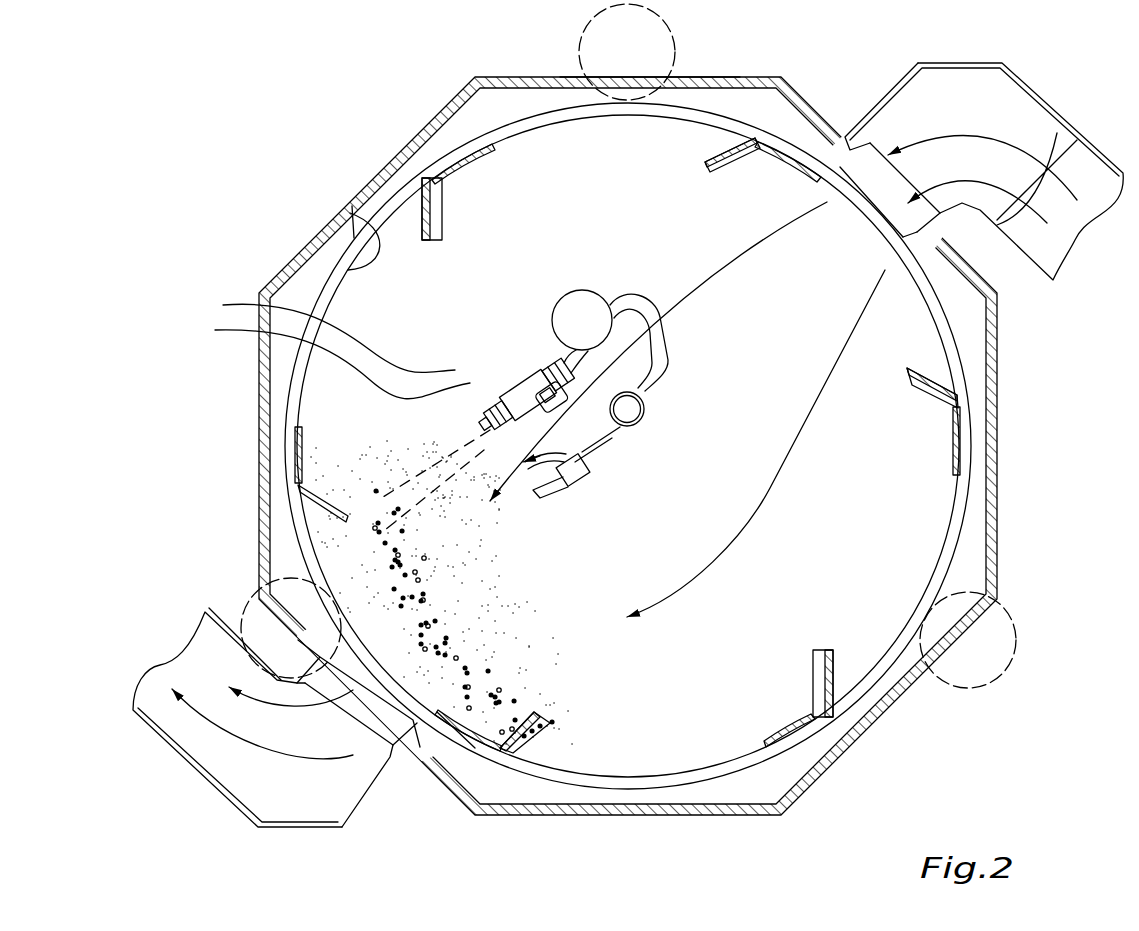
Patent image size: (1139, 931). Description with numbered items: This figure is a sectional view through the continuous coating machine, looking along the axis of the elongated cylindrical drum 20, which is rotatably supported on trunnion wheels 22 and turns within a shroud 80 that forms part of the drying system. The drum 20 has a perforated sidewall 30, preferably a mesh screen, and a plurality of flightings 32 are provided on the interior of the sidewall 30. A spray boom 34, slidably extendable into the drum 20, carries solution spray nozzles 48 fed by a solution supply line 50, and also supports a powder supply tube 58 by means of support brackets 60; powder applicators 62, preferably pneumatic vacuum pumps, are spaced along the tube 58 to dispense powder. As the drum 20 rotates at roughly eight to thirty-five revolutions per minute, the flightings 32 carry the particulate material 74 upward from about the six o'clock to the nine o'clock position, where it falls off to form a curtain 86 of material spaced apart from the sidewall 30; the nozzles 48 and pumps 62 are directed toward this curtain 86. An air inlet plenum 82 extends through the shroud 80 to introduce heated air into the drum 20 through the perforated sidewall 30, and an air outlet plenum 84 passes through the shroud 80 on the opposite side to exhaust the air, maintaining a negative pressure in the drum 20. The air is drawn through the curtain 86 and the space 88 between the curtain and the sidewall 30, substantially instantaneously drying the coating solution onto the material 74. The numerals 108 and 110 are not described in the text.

The drum 20 is at (328, 216).
The trunnion wheels 22 is at (582, 46).
The perforated sidewall 30 is at (352, 206).
The flightings 32 is at (437, 190).
The spray boom 34 is at (572, 295).
The solution spray nozzles 48 is at (524, 378).
The solution supply line 50 is at (740, 427).
The powder supply tube 58 is at (646, 428).
The support brackets 60 is at (641, 291).
The powder applicators 62 is at (548, 493).
The particulate material 74 is at (473, 722).
The shroud 80 is at (722, 77).
The air inlet plenum 82 is at (950, 62).
The air outlet plenum 84 is at (218, 790).
The curtain of material 86 is at (387, 512).
The space 88 is at (363, 590).
The feed tube 108 is at (321, 332).
The feed tube wall 110 is at (323, 359).